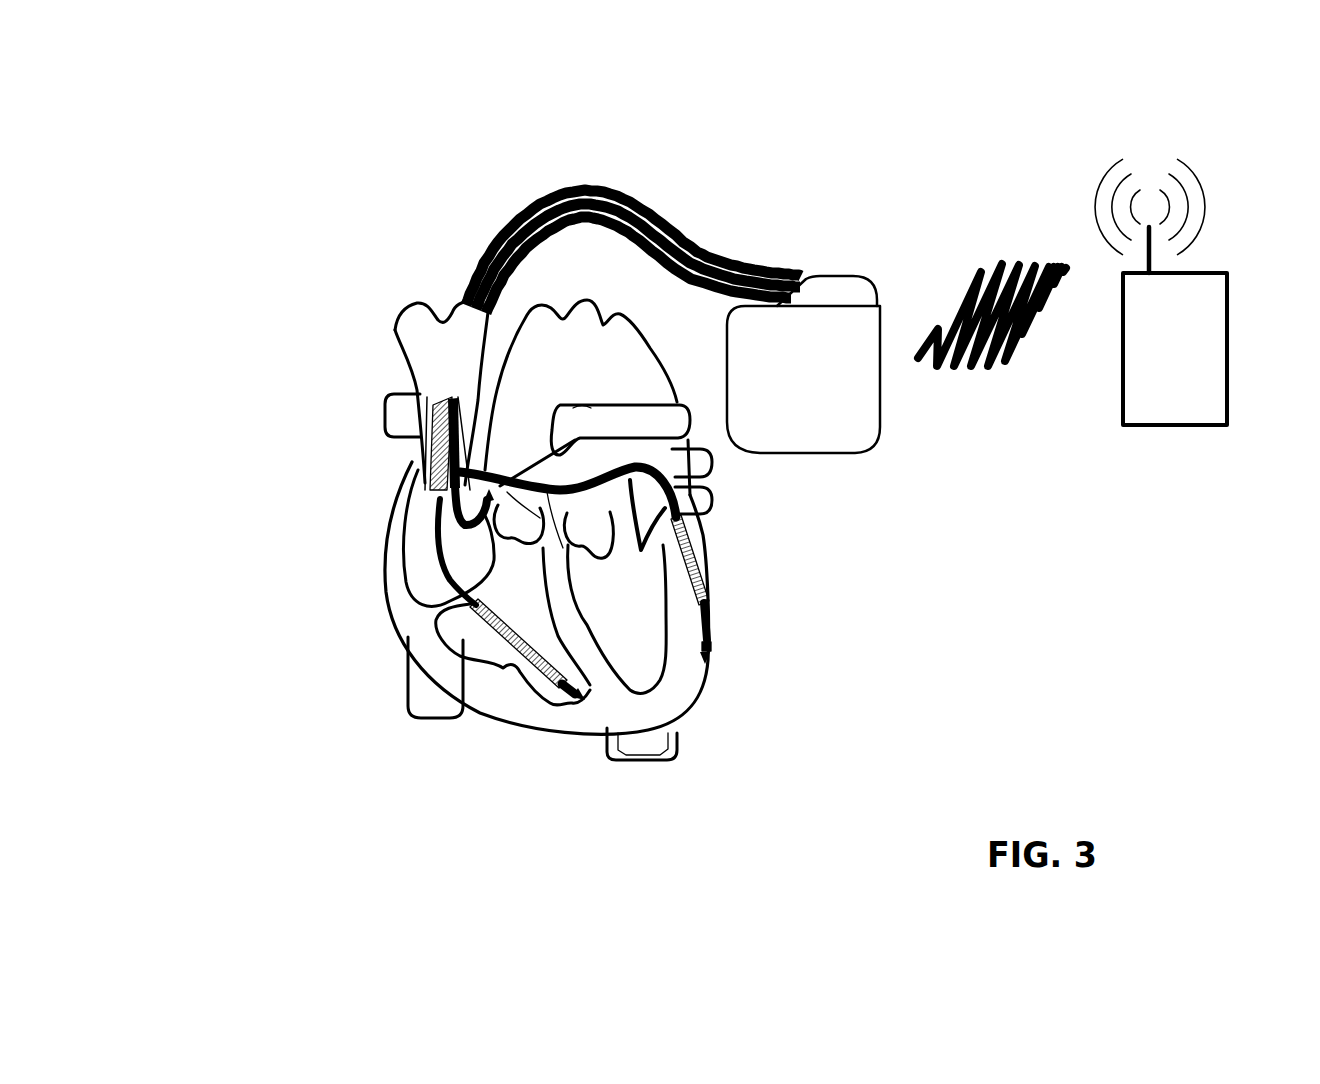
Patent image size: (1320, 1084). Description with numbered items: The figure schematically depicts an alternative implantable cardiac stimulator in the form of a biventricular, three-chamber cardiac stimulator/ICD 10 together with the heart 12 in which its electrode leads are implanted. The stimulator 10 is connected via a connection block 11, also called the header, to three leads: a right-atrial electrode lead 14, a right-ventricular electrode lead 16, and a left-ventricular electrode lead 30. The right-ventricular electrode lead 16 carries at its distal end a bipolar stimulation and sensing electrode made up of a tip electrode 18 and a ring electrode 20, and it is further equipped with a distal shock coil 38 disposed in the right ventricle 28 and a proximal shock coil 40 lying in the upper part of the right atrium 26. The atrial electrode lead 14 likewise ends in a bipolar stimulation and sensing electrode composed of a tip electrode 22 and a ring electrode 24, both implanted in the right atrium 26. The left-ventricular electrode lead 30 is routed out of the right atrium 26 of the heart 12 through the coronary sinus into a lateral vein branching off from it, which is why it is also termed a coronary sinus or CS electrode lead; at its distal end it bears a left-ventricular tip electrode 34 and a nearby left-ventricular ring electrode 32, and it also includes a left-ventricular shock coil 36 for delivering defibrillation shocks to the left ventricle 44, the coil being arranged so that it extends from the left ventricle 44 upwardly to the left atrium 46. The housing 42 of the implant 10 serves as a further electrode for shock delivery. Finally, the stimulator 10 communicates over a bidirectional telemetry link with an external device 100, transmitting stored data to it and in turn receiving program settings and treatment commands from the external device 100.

The cardiac stimulator 10 is at (951, 434).
The connection block 11 is at (830, 288).
The heart 12 is at (340, 632).
The right-atrial electrode lead 14 is at (565, 204).
The right-ventricular electrode lead 16 is at (490, 241).
The tip electrode 18 is at (580, 700).
The ring electrode 20 is at (565, 688).
The tip electrode 22 is at (488, 493).
The ring electrode 24 is at (490, 504).
The right atrium 26 is at (428, 562).
The right ventricle 28 is at (493, 649).
The left-ventricular electrode lead 30 is at (703, 292).
The left-ventricular ring electrode 32 is at (711, 647).
The left-ventricular tip electrode 34 is at (706, 663).
The left-ventricular shock coil 36 is at (704, 578).
The distal shock coil 38 is at (490, 625).
The proximal shock coil 40 is at (442, 465).
The housing 42 is at (832, 422).
The left ventricle 44 is at (642, 672).
The left atrium 46 is at (700, 662).
The external device 100 is at (1168, 449).